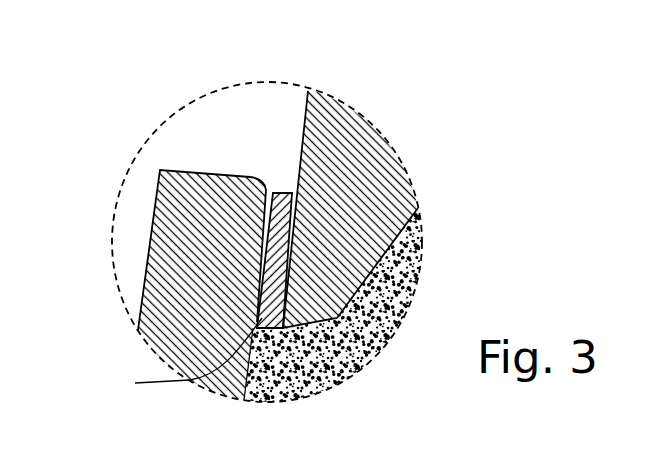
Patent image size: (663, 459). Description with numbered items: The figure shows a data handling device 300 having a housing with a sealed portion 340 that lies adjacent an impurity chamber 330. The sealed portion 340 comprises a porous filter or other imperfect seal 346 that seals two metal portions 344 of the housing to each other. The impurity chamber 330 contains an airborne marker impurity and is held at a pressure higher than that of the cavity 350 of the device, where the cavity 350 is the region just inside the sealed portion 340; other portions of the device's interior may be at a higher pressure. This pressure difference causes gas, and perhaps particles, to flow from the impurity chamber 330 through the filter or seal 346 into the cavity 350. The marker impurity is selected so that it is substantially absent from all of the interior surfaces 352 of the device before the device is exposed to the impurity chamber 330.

The data handling device 300 is at (454, 64).
The impurity chamber 330 is at (413, 238).
The sealed portion 340 is at (369, 106).
The metal portions 344 is at (225, 257).
The porous filter or imperfect seal 346 is at (177, 358).
The cavity 350 is at (128, 241).
The interior surfaces 352 is at (279, 183).